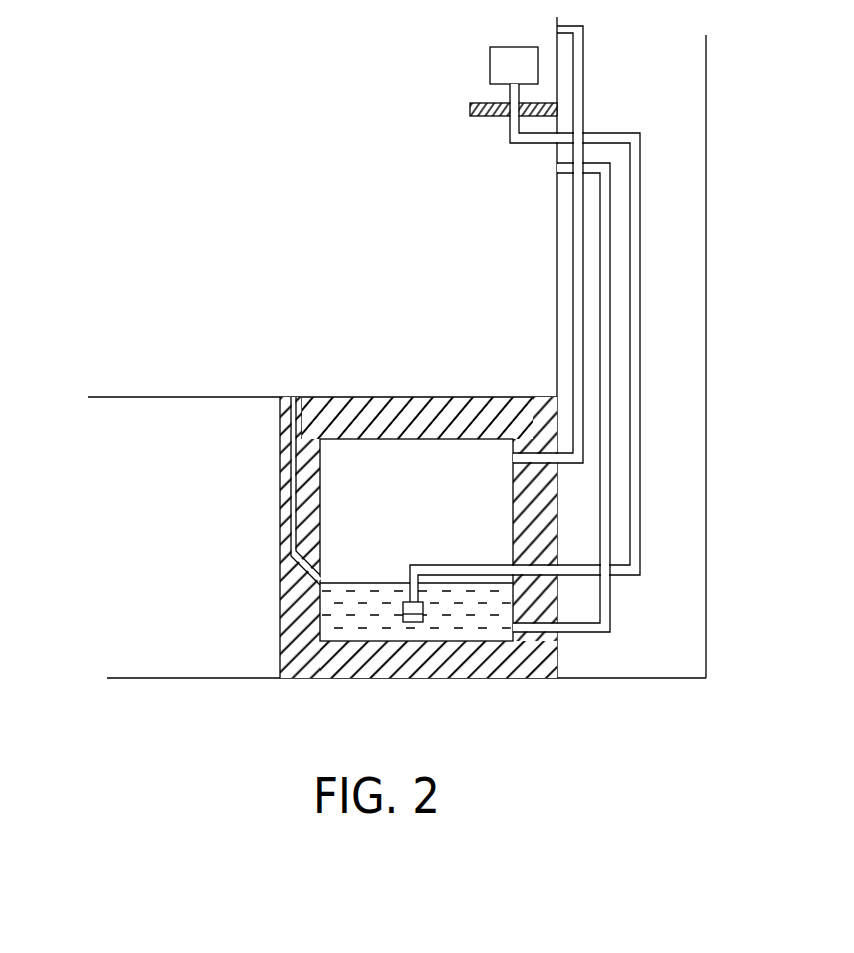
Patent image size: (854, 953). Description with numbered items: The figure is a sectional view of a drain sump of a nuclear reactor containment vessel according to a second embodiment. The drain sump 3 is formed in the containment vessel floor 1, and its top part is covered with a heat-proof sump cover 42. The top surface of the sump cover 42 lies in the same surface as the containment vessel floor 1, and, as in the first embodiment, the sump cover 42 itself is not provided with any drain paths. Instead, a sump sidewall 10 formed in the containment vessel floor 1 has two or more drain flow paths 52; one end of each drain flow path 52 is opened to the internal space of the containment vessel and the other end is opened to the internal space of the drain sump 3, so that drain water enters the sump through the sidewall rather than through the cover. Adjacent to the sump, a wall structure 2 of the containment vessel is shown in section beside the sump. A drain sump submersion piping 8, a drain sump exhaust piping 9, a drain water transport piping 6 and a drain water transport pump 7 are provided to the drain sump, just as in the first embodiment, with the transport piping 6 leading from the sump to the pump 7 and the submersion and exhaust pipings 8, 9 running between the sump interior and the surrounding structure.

The containment vessel floor 1 is at (118, 448).
The wall / structure 2 is at (697, 378).
The drain sump 3 is at (417, 468).
The sump cover 42 is at (417, 398).
The drain flow path 52 is at (290, 397).
The drain water transport piping 6 is at (640, 320).
The drain water transport pump 7 is at (508, 48).
The drain sump submersion piping 8 is at (605, 621).
The drain sump exhaust piping 9 is at (585, 30).
The sump sidewall 10 is at (280, 437).